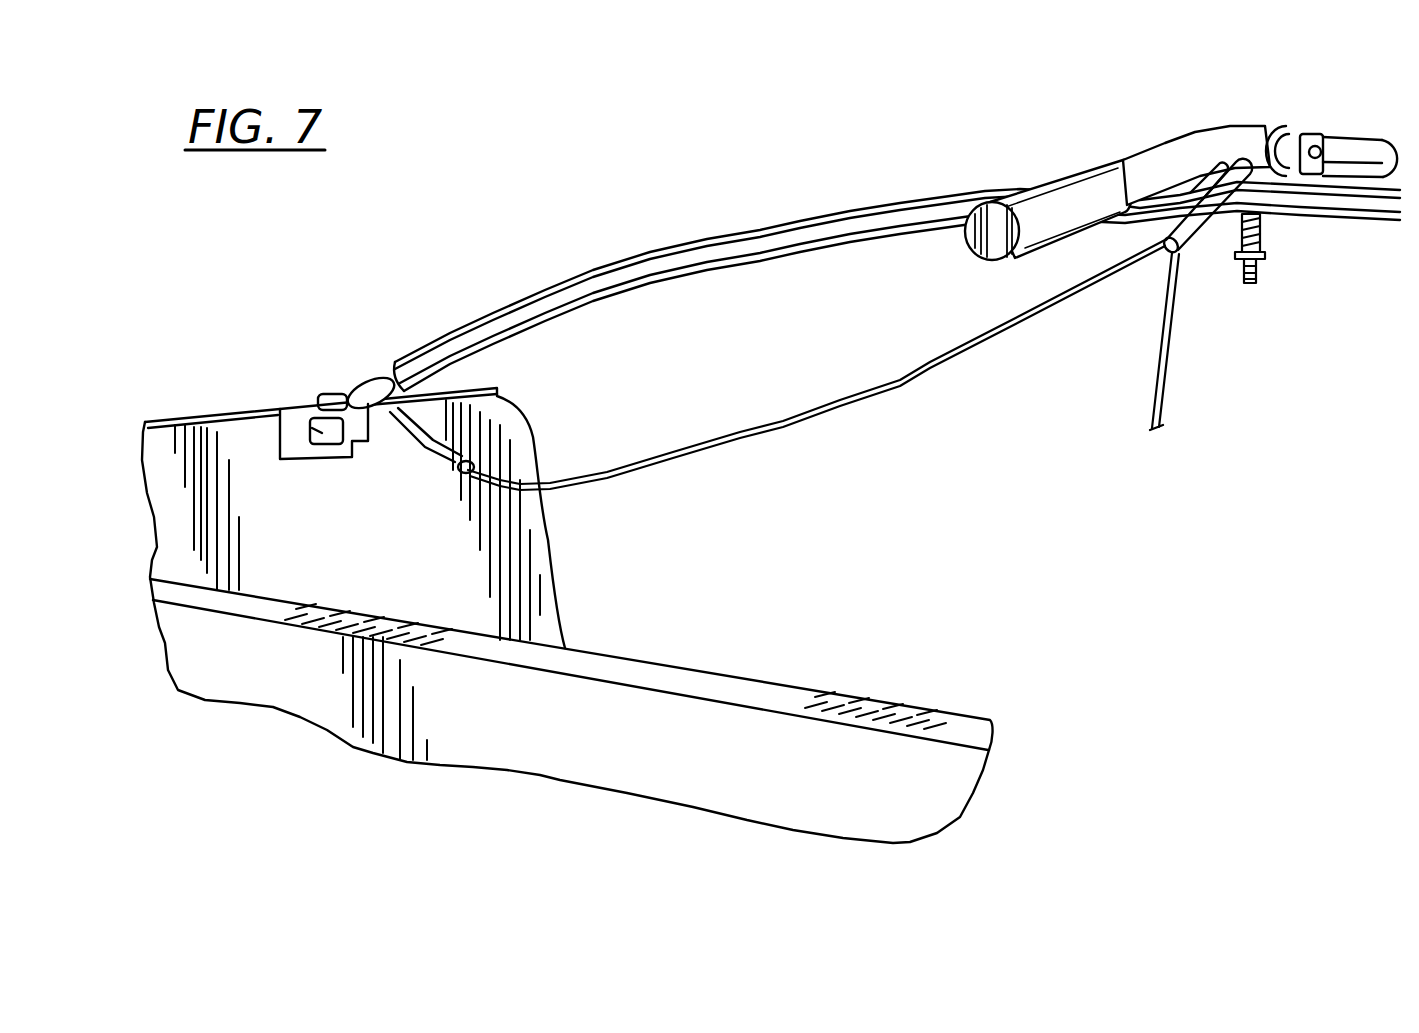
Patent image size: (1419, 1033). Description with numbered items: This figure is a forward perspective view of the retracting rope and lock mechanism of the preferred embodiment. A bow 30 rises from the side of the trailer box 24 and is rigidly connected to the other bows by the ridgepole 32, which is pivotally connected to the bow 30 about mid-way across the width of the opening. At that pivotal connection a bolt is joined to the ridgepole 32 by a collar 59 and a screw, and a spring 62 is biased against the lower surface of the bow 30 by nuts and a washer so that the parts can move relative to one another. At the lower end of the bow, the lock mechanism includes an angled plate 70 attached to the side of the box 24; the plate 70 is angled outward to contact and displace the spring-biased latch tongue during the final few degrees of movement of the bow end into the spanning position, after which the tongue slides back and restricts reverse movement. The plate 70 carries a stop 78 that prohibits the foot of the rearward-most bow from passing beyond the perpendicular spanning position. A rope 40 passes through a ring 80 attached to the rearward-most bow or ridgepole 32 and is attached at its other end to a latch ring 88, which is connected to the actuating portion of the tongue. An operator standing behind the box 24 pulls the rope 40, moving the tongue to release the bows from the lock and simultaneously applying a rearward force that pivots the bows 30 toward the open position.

The box 24 is at (375, 566).
The bow 30 is at (718, 243).
The ridgepole 32 is at (1165, 165).
The rope 40 is at (1170, 377).
The collar 59 is at (1303, 130).
The spring 62 is at (1263, 233).
The angled plate 70 is at (287, 410).
The stop 78 is at (327, 392).
The ring 80 is at (1196, 232).
The latch ring 88 is at (410, 408).